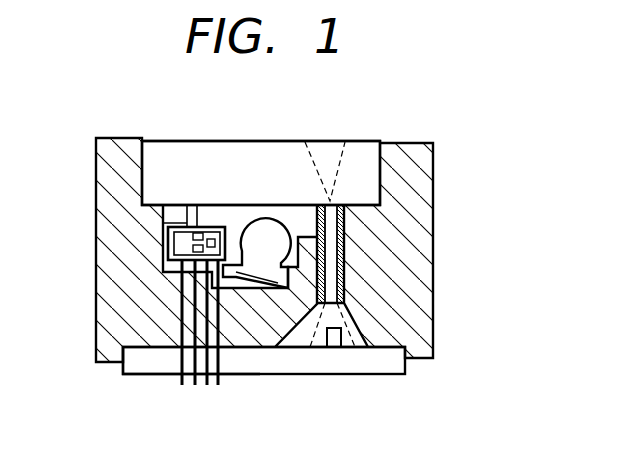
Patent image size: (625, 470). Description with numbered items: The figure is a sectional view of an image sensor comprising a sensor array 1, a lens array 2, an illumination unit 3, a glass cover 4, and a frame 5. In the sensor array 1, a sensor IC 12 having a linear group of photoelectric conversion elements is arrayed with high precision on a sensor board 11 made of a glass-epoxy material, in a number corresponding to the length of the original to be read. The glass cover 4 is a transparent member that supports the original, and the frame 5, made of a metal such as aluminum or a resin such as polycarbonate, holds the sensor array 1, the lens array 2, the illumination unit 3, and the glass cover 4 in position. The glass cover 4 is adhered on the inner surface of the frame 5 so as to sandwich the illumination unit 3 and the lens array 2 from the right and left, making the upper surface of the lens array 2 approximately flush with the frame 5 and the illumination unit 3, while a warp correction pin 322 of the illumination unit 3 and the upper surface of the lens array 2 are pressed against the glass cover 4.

The sensor array 1 is at (272, 375).
The lens array 2 is at (333, 237).
The illumination unit 3 is at (273, 222).
The glass cover 4 is at (196, 140).
The frame 5 is at (100, 262).
The sensor board 11 is at (150, 370).
The sensor IC 12 is at (340, 333).
The warp correction pin 322 is at (160, 220).